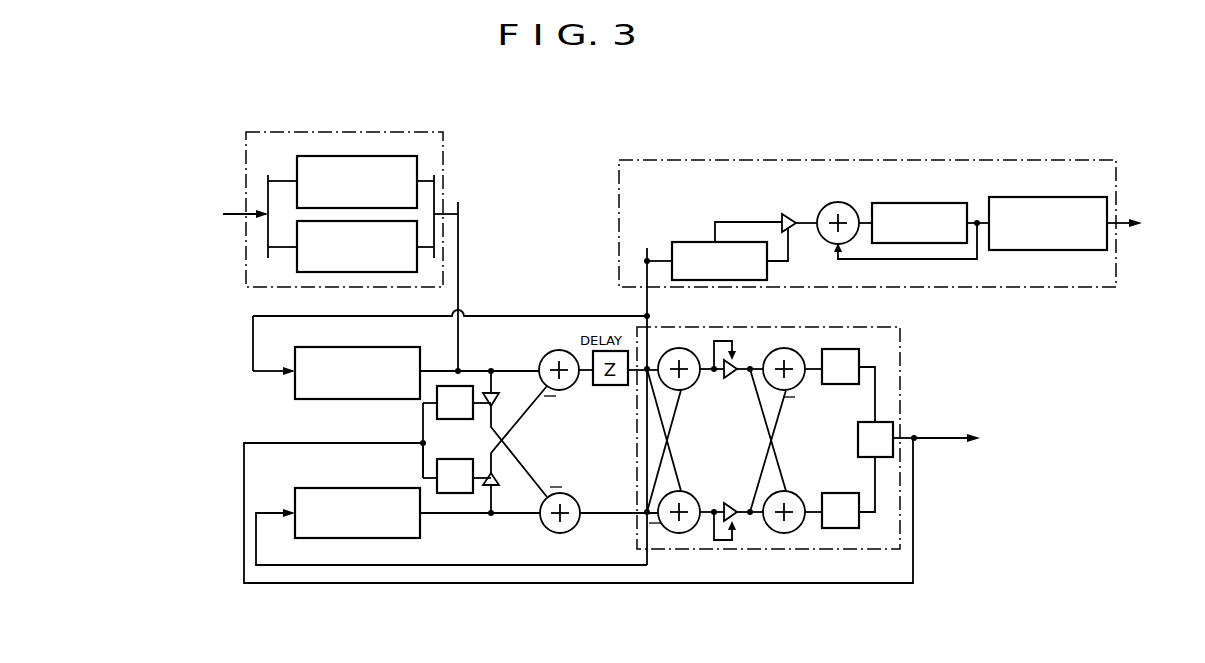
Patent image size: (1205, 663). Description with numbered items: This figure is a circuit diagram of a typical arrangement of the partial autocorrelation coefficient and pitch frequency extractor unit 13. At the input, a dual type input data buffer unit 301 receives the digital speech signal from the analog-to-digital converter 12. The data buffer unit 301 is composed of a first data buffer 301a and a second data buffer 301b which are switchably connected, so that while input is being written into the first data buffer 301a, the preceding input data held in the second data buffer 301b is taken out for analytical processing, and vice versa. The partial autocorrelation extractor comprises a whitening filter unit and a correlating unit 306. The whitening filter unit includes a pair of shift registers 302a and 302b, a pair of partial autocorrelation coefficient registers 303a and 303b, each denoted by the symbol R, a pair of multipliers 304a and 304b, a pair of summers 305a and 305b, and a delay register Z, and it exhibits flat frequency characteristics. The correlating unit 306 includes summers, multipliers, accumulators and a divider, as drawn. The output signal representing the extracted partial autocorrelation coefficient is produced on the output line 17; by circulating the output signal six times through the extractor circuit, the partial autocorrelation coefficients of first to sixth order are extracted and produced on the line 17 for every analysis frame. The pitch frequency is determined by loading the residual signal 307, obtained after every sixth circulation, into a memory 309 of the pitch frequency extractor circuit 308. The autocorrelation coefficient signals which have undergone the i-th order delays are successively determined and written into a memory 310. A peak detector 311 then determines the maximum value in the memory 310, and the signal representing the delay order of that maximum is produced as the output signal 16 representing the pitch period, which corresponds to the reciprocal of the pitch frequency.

The analog-to-digital converter 12 is at (181, 213).
The partial autocorrelation coefficient and pitch frequency extractor unit 13 is at (578, 592).
The output signal 16 is at (1120, 218).
The output line 17 is at (942, 432).
The input data buffer unit 301 is at (443, 150).
The first data buffer 301a is at (350, 156).
The second data buffer 301b is at (362, 272).
The shift register 302a is at (392, 346).
The shift register 302b is at (385, 487).
The partial autocorrelation coefficient register 303a is at (438, 421).
The partial autocorrelation coefficient register 303b is at (455, 493).
The multiplier 304a is at (497, 388).
The multiplier 304b is at (497, 490).
The summer 305a is at (568, 388).
The summer 305b is at (572, 496).
The correlating unit 306 is at (900, 355).
The residual signal 307 is at (648, 296).
The pitch frequency extractor circuit 308 is at (765, 160).
The memory 309 is at (767, 272).
The memory 310 is at (898, 203).
The peak detector 311 is at (1030, 197).